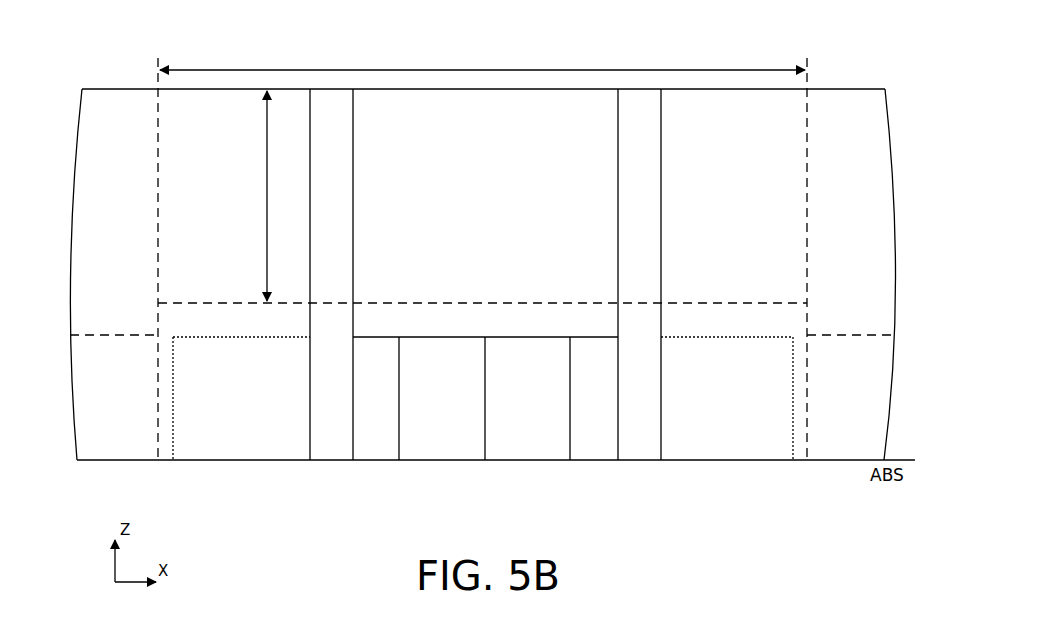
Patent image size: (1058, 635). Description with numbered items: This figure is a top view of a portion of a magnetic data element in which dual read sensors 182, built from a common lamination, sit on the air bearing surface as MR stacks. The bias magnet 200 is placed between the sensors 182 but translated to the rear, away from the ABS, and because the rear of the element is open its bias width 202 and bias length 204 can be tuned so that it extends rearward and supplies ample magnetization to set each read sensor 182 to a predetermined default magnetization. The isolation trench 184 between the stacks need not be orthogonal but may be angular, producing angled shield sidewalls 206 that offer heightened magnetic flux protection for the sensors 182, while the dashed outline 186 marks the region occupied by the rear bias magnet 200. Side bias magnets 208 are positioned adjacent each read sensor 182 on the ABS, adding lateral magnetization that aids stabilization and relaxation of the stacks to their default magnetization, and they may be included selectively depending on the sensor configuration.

The read sensor 182 is at (257, 463).
The isolation trench 184 is at (485, 462).
The dashed outline of bias magnet region 186 is at (128, 88).
The bias magnet 200 is at (485, 274).
The bias width 202 is at (482, 59).
The bias length 204 is at (285, 196).
The angled shield sidewalls 206 is at (328, 462).
The side bias magnet 208 is at (482, 376).